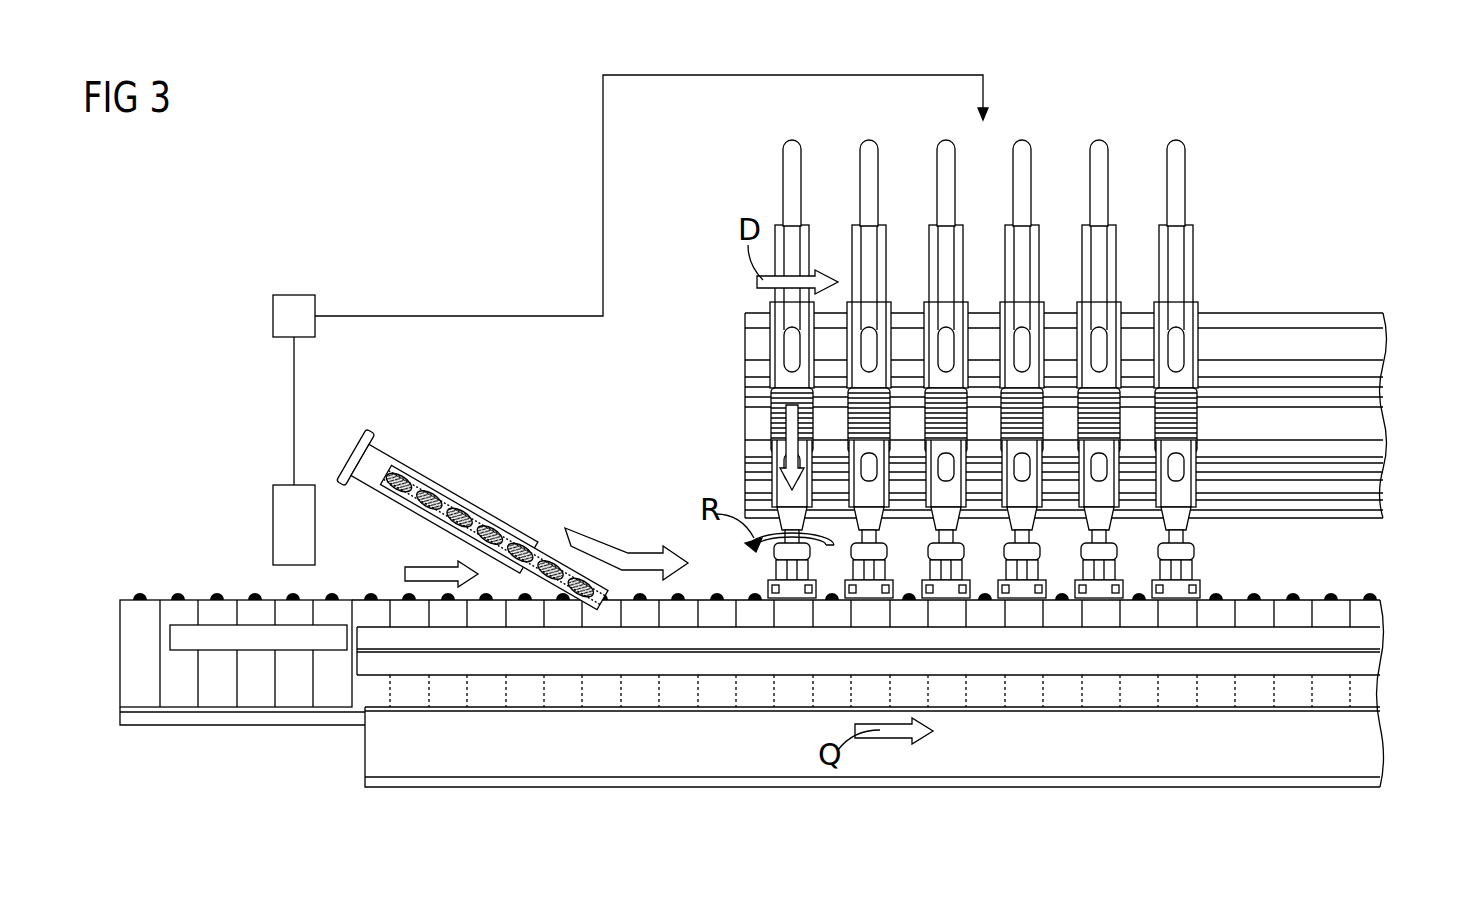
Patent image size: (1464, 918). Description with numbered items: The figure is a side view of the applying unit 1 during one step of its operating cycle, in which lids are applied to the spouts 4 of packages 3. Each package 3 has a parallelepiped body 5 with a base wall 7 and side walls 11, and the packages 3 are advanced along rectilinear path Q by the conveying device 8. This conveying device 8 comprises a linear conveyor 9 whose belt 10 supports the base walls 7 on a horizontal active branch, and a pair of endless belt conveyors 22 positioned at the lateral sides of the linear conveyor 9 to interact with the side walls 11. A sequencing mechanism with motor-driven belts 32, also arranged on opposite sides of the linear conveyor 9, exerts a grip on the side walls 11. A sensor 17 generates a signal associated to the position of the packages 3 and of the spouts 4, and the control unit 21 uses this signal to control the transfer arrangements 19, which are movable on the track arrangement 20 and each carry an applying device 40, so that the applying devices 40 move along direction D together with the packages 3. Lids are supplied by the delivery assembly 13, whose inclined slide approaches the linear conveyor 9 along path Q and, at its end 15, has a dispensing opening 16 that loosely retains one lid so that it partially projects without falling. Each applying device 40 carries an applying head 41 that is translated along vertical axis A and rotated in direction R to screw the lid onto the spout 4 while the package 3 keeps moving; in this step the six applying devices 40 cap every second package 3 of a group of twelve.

The applying unit 1 is at (478, 155).
The package 3 is at (181, 690).
The spout 4 is at (140, 597).
The parallelepiped body 5 is at (128, 655).
The base wall 7 is at (215, 707).
The conveying device 8 is at (1388, 600).
The linear conveyor 9 is at (440, 800).
The belt 10 is at (148, 722).
The side wall 11 is at (329, 688).
The delivery assembly 13 is at (476, 514).
The end of the slide 15 is at (590, 518).
The dispensing opening 16 is at (577, 600).
The sensor 17 is at (273, 530).
The transfer arrangement 19 is at (770, 302).
The track arrangement 20 is at (1303, 287).
The control unit 21 is at (293, 295).
The endless belt conveyor 22 is at (680, 665).
The belt 32 is at (232, 637).
The applying device 40 is at (802, 229).
The applying head 41 is at (768, 580).